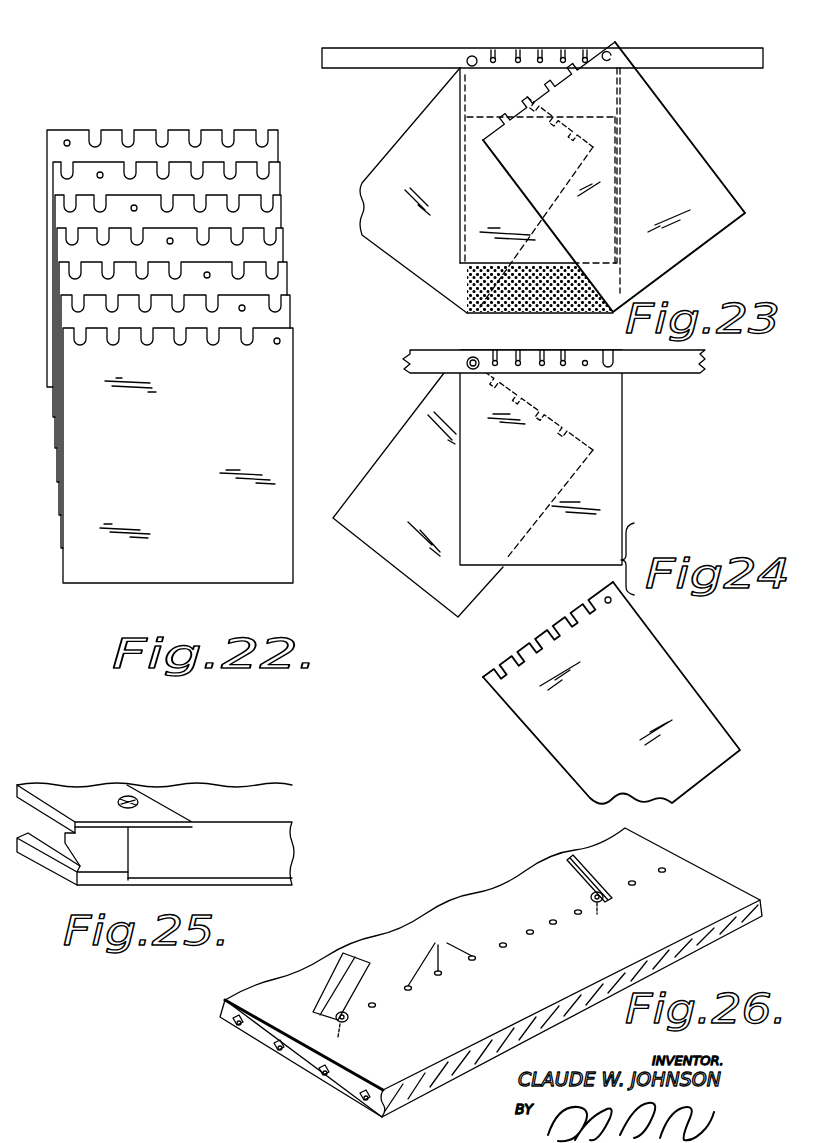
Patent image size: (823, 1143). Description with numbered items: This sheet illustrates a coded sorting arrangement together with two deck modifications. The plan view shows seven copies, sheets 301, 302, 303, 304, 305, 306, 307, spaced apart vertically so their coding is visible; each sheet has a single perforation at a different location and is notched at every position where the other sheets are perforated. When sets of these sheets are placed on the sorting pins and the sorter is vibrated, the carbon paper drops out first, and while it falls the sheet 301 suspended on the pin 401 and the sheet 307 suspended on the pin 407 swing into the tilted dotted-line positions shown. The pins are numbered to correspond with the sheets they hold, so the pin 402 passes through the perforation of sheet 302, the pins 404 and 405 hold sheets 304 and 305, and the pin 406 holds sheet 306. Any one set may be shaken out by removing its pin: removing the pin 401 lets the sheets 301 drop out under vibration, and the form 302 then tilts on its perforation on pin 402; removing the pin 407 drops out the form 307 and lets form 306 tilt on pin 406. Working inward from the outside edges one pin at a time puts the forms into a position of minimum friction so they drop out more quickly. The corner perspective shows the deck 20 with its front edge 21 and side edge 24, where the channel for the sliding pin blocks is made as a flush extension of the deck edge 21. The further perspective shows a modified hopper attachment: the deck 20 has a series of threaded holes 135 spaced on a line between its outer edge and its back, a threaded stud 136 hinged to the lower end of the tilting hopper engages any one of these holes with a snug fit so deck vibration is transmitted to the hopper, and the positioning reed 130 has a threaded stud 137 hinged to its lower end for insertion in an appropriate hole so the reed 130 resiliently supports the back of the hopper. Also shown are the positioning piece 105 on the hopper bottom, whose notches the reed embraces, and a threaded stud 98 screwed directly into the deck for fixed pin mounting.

In FIG. 22, the sheet 301 is at (166, 441).
In FIG. 23, the sheet 301 is at (645, 189).
In FIG. 24, the sheet 301 is at (598, 704).
In FIG. 22, the sheet 302 is at (286, 315).
In FIG. 23, the sheet 302 is at (483, 210).
In FIG. 24, the sheet 302 is at (520, 471).
In FIG. 22, the sheet 303 is at (284, 283).
In FIG. 22, the sheet 304 is at (281, 250).
In FIG. 22, the sheet 305 is at (277, 218).
In FIG. 22, the sheet 306 is at (278, 184).
In FIG. 22, the sheet 307 is at (272, 151).
In FIG. 23, the sheet 307 is at (408, 196).
In FIG. 24, the sheet 307 is at (396, 501).
In FIG. 23, the sorting pin 401 is at (616, 42).
In FIG. 24, the sorting pin 401 is at (554, 361).
In FIG. 23, the sorting pin 402 is at (593, 46).
In FIG. 23, the sorting pin 404 is at (540, 70).
In FIG. 23, the sorting pin 405 is at (541, 52).
In FIG. 23, the sorting pin 406 is at (493, 52).
In FIG. 23, the sorting pin 407 is at (462, 64).
In FIG. 25, the deck 20 is at (155, 834).
In FIG. 26, the deck 20 is at (484, 1009).
In FIG. 25, the front edge 21 is at (93, 852).
In FIG. 25, the side edge 24 is at (220, 860).
In FIG. 26, the threaded stud 98 is at (278, 1048).
In FIG. 26, the positioning piece 105 is at (358, 972).
In FIG. 26, the positioning reed 130 is at (577, 868).
In FIG. 26, the threaded holes 135 is at (440, 955).
In FIG. 26, the threaded stud 136 is at (350, 1019).
In FIG. 26, the threaded stud 137 is at (604, 910).